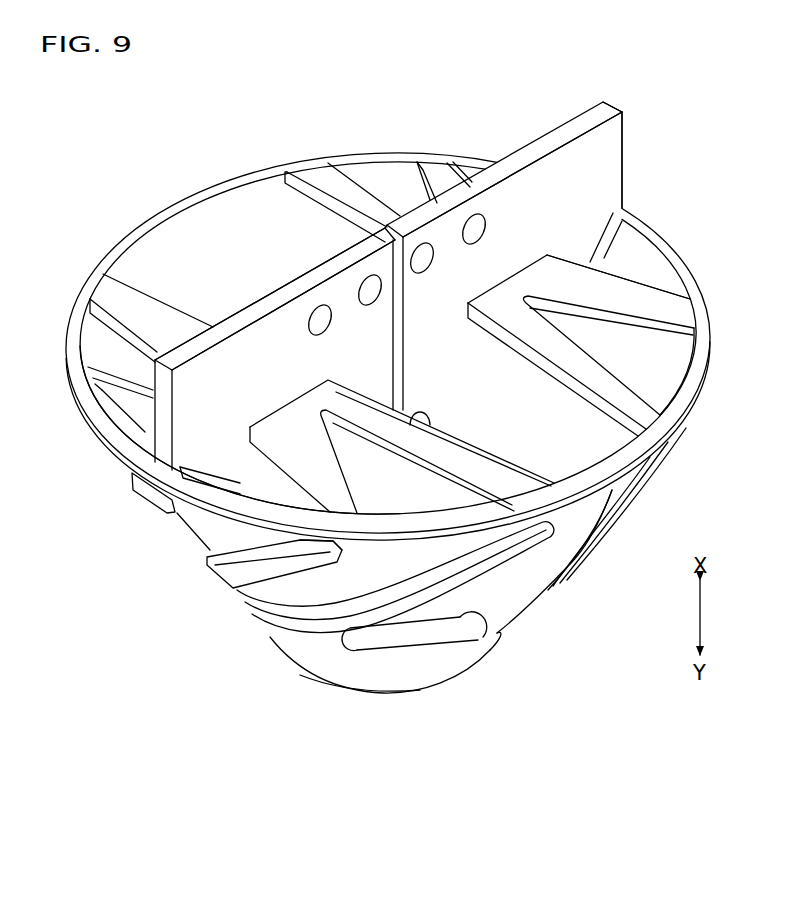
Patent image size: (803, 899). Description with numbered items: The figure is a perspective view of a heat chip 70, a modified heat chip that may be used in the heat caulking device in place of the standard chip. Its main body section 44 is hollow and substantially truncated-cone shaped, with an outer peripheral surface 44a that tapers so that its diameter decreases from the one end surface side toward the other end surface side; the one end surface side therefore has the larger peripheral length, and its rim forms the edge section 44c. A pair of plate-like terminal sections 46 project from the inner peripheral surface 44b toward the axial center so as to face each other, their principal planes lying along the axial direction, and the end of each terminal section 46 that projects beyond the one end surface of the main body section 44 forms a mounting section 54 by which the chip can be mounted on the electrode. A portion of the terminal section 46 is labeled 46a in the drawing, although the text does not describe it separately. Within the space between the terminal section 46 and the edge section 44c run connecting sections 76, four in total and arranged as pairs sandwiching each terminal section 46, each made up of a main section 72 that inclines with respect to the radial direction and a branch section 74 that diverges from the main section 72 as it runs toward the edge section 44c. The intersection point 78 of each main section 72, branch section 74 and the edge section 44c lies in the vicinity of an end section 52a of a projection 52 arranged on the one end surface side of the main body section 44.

The heat chip 70 is at (187, 84).
The main body section 44 is at (672, 201).
The outer peripheral surface 44a is at (403, 677).
The inner peripheral surface 44b is at (188, 227).
The edge section 44c is at (638, 227).
The terminal section 46 is at (282, 287).
The upper edge of partition plate 46a is at (333, 268).
The projection 52 is at (307, 627).
The end section 52a is at (423, 145).
The mounting section 54 is at (197, 422).
The main section 72 is at (627, 387).
The branch section 74 is at (618, 297).
The connecting section 76 is at (345, 135).
The intersection point 78 is at (433, 160).